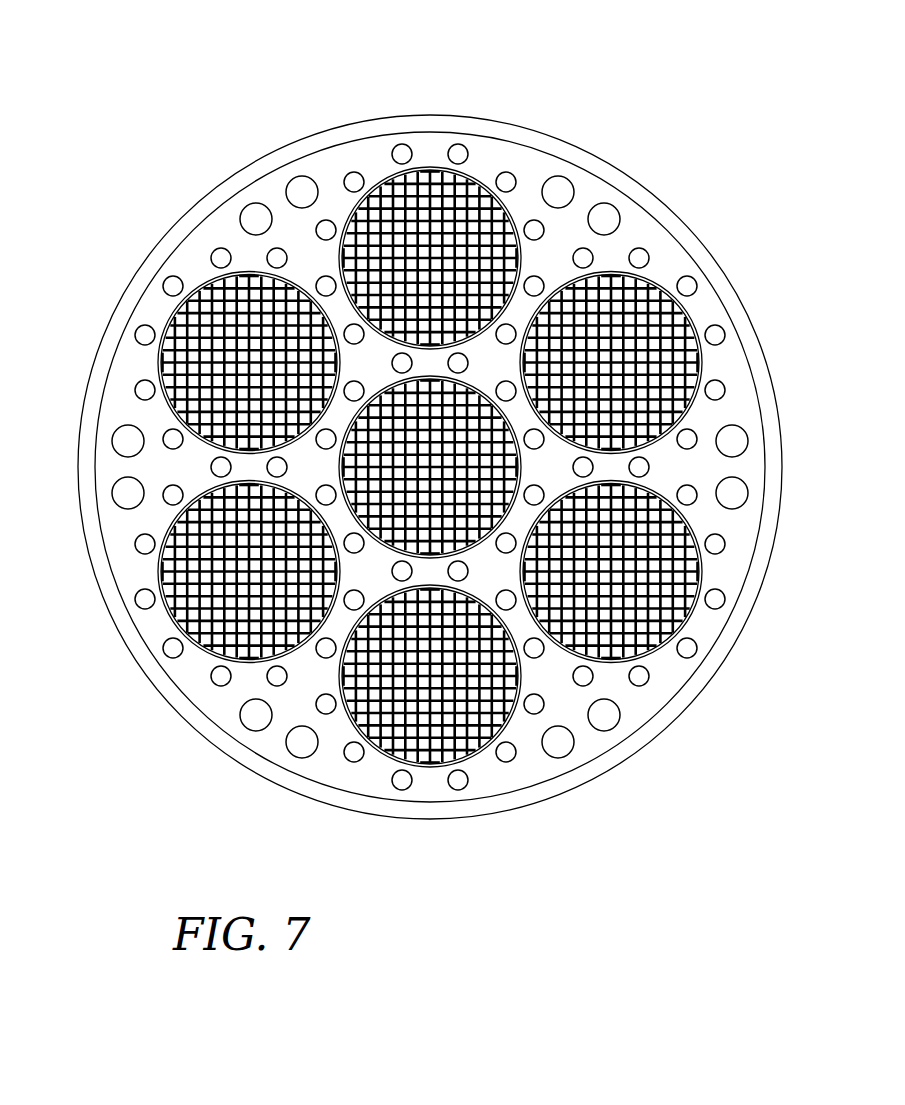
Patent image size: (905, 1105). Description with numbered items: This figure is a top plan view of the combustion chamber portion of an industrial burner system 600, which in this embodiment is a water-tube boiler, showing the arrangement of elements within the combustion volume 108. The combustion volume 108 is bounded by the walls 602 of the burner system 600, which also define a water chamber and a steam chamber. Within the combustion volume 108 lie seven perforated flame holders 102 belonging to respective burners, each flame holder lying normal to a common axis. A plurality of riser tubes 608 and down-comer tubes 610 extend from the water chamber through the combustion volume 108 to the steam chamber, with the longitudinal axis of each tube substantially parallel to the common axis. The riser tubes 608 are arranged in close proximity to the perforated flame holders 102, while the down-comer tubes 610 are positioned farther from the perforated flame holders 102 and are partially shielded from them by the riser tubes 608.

The burner system 600 is at (699, 67).
The walls 602 is at (138, 668).
The perforated flame holders 102 is at (208, 280).
The combustion volume 108 is at (398, 465).
The riser tubes 608 is at (323, 276).
The down-comer tubes 610 is at (545, 182).